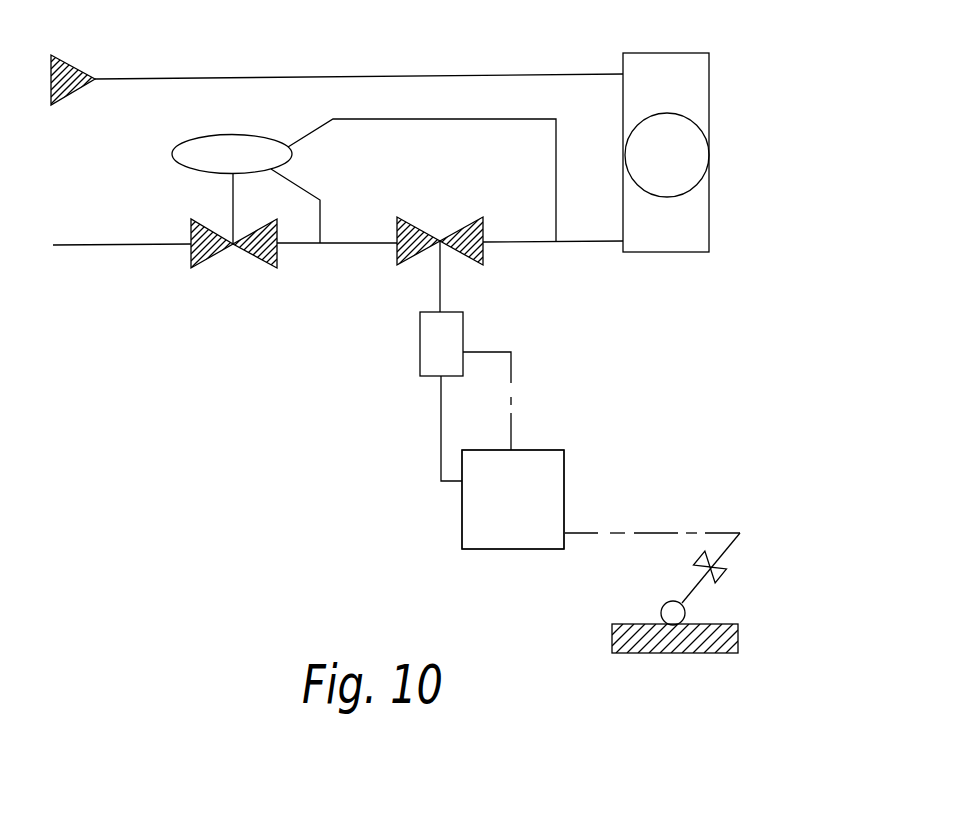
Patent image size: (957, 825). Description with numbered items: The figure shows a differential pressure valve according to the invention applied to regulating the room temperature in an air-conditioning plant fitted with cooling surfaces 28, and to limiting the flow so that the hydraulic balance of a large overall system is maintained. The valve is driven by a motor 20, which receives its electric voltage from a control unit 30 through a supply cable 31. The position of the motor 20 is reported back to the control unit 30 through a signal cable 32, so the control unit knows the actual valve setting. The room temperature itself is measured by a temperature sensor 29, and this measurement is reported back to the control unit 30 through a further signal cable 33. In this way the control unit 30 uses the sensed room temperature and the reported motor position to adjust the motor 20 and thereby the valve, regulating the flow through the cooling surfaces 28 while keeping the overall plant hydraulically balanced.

The motor 20 is at (433, 342).
The cooling surfaces 28 is at (697, 82).
The temperature sensor 29 is at (738, 630).
The control unit 30 is at (557, 492).
The supply cable 31 is at (473, 530).
The signal cable 32 is at (513, 382).
The signal cable 33 is at (662, 533).